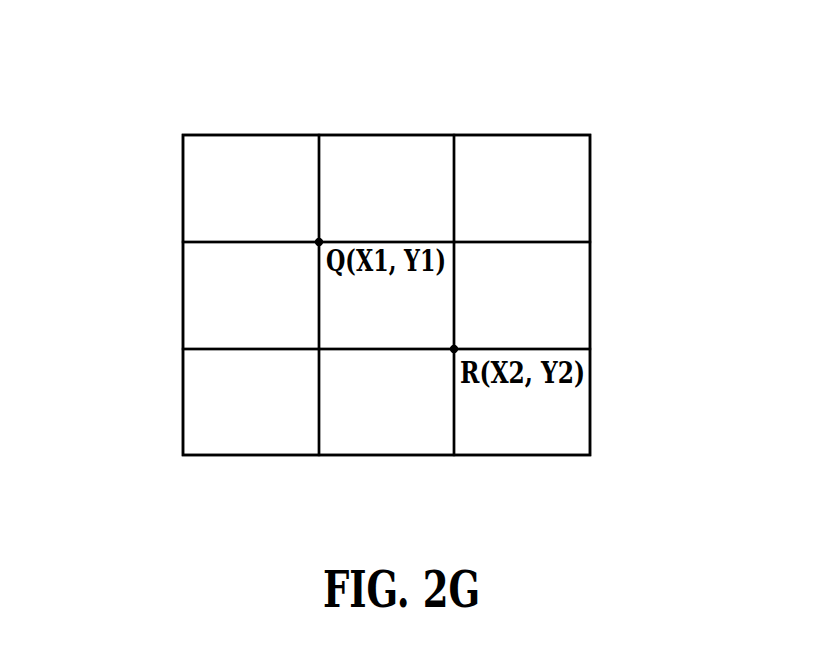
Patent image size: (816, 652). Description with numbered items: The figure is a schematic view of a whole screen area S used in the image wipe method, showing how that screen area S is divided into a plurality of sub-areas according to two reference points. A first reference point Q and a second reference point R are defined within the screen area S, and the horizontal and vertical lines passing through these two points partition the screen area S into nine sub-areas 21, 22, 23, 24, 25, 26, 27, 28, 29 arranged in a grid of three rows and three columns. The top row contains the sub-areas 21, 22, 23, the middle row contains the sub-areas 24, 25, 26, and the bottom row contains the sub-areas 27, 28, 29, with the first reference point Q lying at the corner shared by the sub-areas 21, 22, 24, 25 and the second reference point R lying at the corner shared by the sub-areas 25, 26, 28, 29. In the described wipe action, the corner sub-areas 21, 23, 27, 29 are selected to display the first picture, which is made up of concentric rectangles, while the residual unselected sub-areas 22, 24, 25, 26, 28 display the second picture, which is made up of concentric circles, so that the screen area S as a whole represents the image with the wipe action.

The screen area S is at (190, 78).
The sub-area 21 is at (255, 145).
The sub-area 22 is at (380, 147).
The sub-area 23 is at (513, 148).
The sub-area 24 is at (193, 277).
The sub-area 25 is at (330, 307).
The sub-area 26 is at (560, 305).
The sub-area 27 is at (265, 445).
The sub-area 28 is at (390, 445).
The sub-area 29 is at (528, 445).